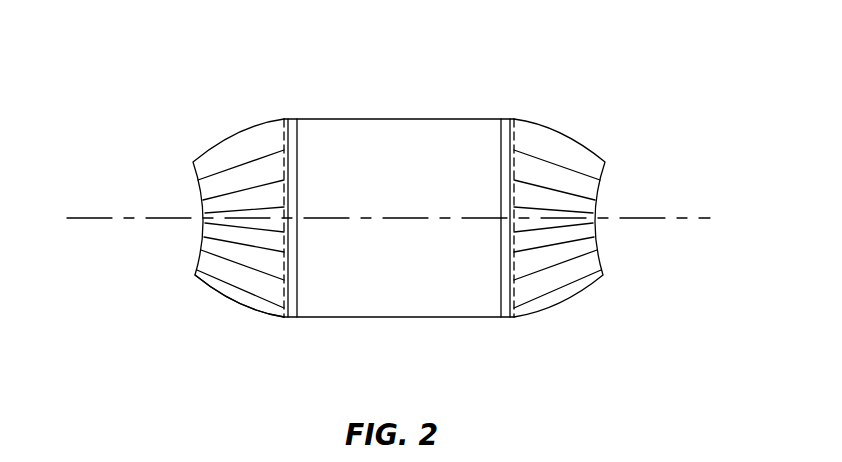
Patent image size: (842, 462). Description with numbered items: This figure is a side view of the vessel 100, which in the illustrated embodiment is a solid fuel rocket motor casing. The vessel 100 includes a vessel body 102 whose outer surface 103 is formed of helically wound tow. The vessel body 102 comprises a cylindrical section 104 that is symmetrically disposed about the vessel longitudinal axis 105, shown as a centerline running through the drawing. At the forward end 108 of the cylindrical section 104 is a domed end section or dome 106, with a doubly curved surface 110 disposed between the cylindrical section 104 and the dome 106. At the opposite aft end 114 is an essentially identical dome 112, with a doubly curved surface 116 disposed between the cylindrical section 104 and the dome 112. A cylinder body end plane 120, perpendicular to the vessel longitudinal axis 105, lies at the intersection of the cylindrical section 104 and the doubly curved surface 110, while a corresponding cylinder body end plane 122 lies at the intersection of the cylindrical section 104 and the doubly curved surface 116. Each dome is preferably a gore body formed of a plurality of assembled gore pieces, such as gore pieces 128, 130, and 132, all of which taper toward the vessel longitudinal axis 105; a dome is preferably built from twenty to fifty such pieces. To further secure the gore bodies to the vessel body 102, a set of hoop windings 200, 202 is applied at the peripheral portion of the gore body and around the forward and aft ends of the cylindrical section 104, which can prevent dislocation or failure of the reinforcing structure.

The vessel 100 is at (371, 202).
The vessel body 102 is at (355, 143).
The outer surface 103 is at (410, 176).
The cylindrical section 104 is at (468, 303).
The vessel longitudinal axis 105 is at (102, 218).
The dome 106 is at (240, 134).
The forward end 108 is at (282, 113).
The doubly curved surface 110 is at (226, 170).
The dome 112 is at (571, 132).
The aft end 114 is at (525, 114).
The doubly curved surface 116 is at (542, 181).
The cylinder body end plane 120 is at (287, 320).
The cylinder body end plane 122 is at (510, 318).
The gore piece 128 is at (213, 247).
The gore piece 130 is at (217, 268).
The gore piece 132 is at (225, 292).
The hoop winding 200 is at (298, 119).
The hoop winding 202 is at (505, 118).